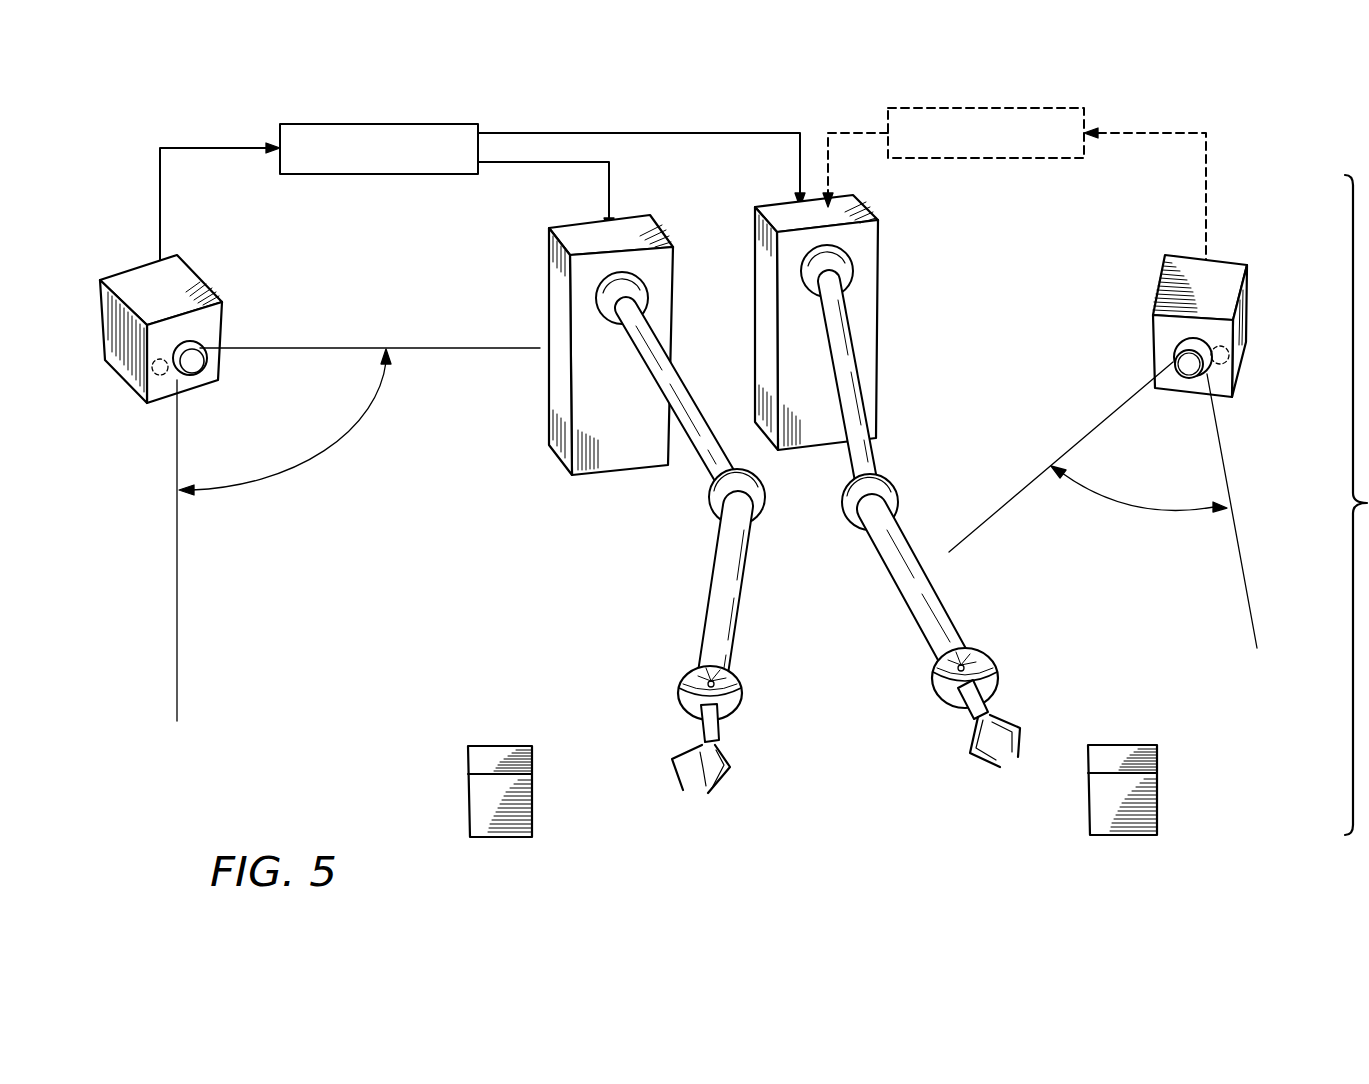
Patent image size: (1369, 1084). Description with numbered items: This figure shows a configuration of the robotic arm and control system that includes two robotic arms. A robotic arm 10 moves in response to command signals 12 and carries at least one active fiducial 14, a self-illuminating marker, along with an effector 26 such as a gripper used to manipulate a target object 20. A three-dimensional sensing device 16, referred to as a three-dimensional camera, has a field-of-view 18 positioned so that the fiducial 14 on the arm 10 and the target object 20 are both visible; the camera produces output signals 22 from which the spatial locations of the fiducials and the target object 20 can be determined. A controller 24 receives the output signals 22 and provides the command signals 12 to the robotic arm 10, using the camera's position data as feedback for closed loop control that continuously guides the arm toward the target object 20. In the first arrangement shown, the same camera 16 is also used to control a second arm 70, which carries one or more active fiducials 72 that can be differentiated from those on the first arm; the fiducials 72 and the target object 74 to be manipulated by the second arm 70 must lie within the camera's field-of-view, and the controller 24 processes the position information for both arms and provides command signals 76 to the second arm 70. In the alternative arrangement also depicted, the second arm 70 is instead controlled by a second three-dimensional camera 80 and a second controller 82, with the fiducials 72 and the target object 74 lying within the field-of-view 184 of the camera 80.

The robotic arm 10 is at (700, 467).
The command signals 12 is at (609, 183).
The active fiducial 14 is at (706, 672).
The 3D sensing device 16 is at (100, 332).
The field-of-view 18 is at (357, 422).
The target object 20 is at (468, 803).
The output signals 22 is at (158, 208).
The controller 24 is at (343, 174).
The effector 26 is at (745, 722).
The second arm 70 is at (880, 462).
The active fiducials 72 is at (963, 650).
The target object 74 is at (1160, 800).
The command signals 76 is at (670, 133).
The second 3D camera 80 is at (1228, 265).
The second controller 82 is at (975, 158).
The second camera field of view angle 184 is at (1124, 501).